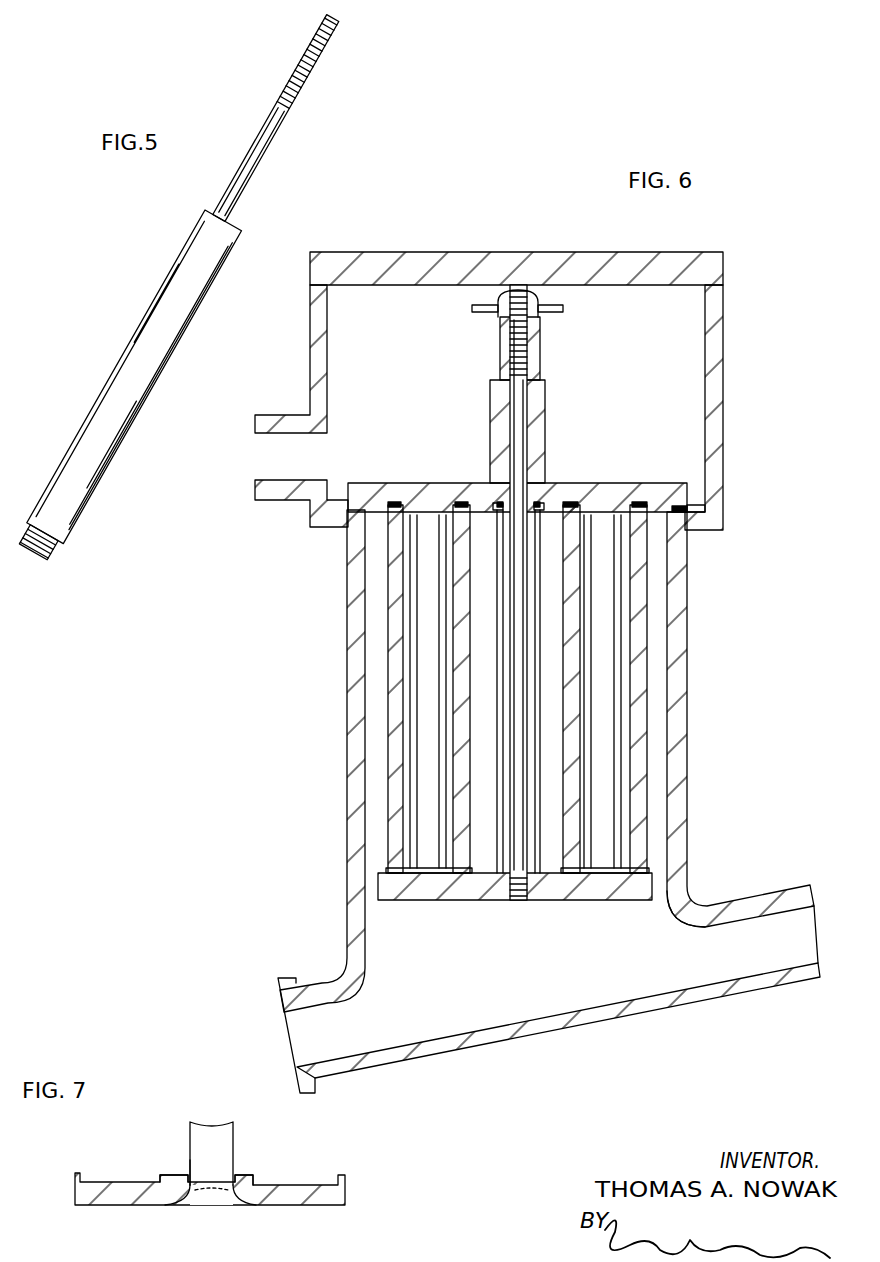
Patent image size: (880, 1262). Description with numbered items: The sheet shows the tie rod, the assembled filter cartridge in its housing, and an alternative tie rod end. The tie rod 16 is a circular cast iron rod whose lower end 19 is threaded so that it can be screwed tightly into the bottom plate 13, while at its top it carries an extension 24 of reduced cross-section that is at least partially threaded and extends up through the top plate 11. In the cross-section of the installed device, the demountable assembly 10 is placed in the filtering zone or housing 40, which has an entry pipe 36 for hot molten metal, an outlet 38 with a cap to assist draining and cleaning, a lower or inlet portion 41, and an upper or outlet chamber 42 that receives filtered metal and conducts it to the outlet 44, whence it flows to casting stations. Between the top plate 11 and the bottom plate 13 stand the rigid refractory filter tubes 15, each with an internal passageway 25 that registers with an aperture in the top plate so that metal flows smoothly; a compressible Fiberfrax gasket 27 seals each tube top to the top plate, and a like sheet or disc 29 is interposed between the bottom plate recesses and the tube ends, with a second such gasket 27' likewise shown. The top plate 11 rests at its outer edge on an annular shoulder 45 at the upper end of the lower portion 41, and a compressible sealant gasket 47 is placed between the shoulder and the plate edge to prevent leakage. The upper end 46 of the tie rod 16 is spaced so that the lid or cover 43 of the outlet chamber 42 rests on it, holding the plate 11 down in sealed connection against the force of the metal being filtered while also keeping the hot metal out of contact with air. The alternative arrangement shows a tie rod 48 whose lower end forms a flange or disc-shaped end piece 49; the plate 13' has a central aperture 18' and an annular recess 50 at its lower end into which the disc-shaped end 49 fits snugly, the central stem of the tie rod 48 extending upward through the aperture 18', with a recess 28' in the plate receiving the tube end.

In FIG. 6, the demountable assembly 10 is at (650, 675).
In FIG. 6, the top plate 11 is at (553, 490).
In FIG. 6, the bottom plate 13 is at (515, 911).
In FIG. 7, the plate 13' is at (230, 1204).
In FIG. 6, the filter tubes 15 is at (682, 617).
In FIG. 5, the tie rod 16 is at (178, 340).
In FIG. 6, the tie rod 16 is at (537, 655).
In FIG. 7, the central aperture 18' is at (165, 1151).
In FIG. 5, the lower end 19 is at (32, 560).
In FIG. 5, the extension 24 is at (298, 106).
In FIG. 6, the internal passageway 25 is at (442, 655).
In FIG. 6, the gasket 27 is at (400, 479).
In FIG. 6, the seal ring 27' is at (462, 479).
In FIG. 7, the boss 28' is at (169, 1167).
In FIG. 6, the sheet or disc 29 is at (410, 872).
In FIG. 6, the entry pipe 36 is at (803, 910).
In FIG. 6, the outlet 38 is at (292, 1015).
In FIG. 6, the housing 40 is at (730, 370).
In FIG. 6, the lower or inlet portion 41 is at (680, 893).
In FIG. 6, the upper or outlet chamber 42 is at (642, 360).
In FIG. 6, the lid or cover 43 is at (599, 252).
In FIG. 6, the outlet 44 is at (255, 458).
In FIG. 6, the annular shoulder 45 is at (695, 512).
In FIG. 6, the upper end 46 is at (498, 292).
In FIG. 6, the compressible sealant gasket 47 is at (678, 508).
In FIG. 7, the tie rod 48 is at (236, 1150).
In FIG. 7, the flange or disc-shaped end piece 49 is at (212, 1195).
In FIG. 7, the annular recess 50 is at (165, 1200).